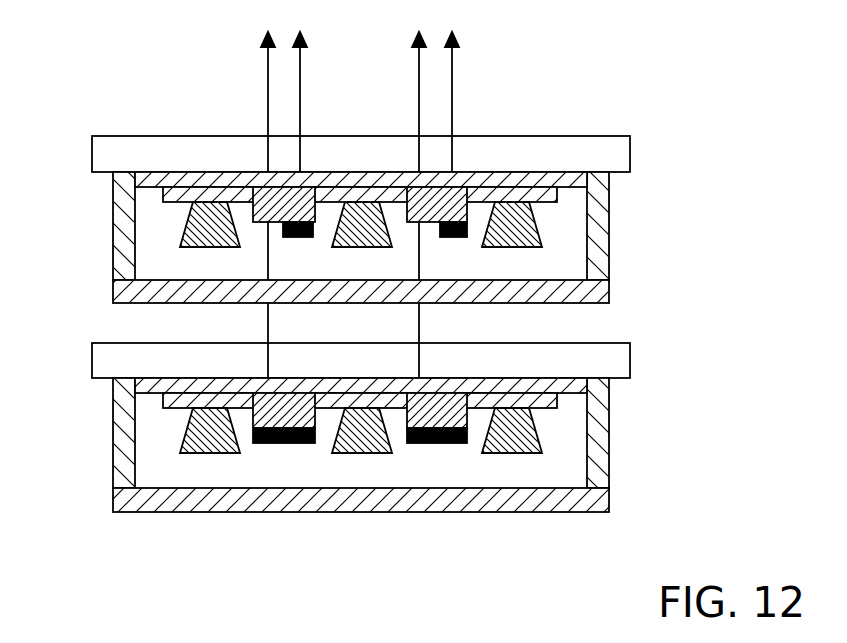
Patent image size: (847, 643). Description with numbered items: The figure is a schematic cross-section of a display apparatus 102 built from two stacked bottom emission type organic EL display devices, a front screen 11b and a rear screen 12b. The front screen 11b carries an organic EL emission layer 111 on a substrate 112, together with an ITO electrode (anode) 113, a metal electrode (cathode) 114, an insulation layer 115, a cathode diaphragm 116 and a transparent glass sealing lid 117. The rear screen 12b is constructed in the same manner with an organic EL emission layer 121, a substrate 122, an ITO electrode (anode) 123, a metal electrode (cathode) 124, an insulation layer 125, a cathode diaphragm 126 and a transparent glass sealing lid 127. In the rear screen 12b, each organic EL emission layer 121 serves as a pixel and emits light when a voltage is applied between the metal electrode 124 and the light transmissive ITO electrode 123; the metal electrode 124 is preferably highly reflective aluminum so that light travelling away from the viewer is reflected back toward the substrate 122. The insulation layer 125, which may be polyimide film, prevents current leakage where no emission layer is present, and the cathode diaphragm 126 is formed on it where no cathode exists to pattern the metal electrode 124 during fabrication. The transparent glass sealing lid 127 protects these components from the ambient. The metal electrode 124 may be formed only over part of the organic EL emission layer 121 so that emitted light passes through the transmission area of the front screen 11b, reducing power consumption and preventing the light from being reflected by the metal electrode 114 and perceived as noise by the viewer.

The display apparatus 102 is at (719, 37).
The front screen 11b is at (713, 224).
The rear screen 12b is at (716, 434).
The organic EL emission layer 111 is at (267, 208).
The substrate 112 is at (630, 147).
The ITO electrode (anode) 113 is at (143, 188).
The metal electrode (cathode) 114 is at (313, 229).
The insulation layer 115 is at (175, 203).
The cathode diaphragm 116 is at (512, 202).
The transparent glass sealing lid 117 is at (609, 282).
The organic EL emission layer 121 is at (307, 446).
The substrate 122 is at (630, 352).
The ITO electrode (anode) 123 is at (152, 394).
The metal electrode (cathode) 124 is at (283, 444).
The insulation layer 125 is at (175, 409).
The cathode diaphragm 126 is at (208, 454).
The transparent glass sealing lid 127 is at (600, 517).